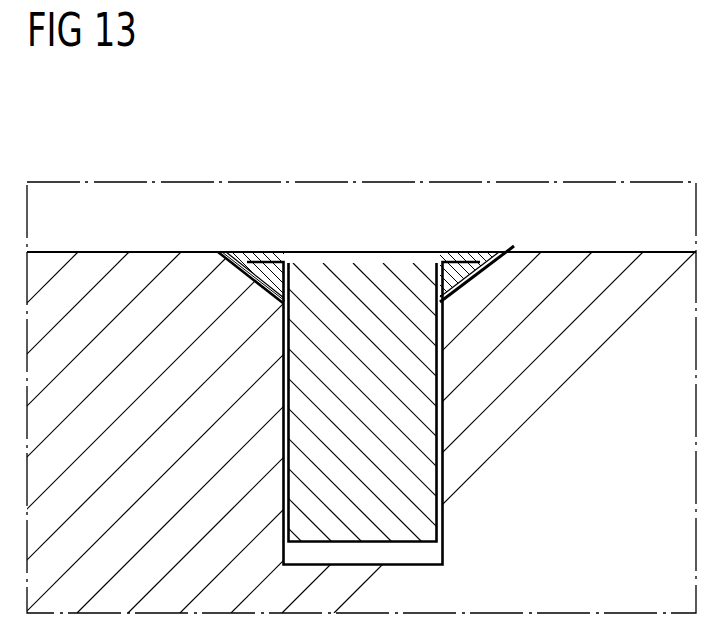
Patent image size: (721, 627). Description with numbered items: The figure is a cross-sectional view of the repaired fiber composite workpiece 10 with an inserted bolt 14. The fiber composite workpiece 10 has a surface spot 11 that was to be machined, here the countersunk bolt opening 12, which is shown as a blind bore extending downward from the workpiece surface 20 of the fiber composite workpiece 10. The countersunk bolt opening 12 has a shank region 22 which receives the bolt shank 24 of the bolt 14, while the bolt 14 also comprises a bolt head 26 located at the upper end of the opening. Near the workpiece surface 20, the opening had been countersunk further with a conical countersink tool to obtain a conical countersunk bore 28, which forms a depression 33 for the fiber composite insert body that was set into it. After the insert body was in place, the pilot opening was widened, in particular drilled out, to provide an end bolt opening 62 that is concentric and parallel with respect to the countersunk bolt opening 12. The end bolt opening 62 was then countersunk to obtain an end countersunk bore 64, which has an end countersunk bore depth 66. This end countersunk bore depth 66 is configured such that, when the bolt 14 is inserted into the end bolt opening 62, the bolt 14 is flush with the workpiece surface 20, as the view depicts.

The fiber composite workpiece 10 is at (122, 150).
The surface spot 11 is at (404, 203).
The countersunk bolt opening 12 is at (292, 556).
The bolt 14 is at (361, 270).
The workpiece surface 20 is at (612, 251).
The shank region 22 is at (444, 458).
The bolt shank 24 is at (440, 518).
The bolt head 26 is at (326, 251).
The conical countersunk bore 28 is at (247, 283).
The depression 33 is at (522, 236).
The end bolt opening 62 is at (460, 277).
The end countersunk bore 64 is at (262, 262).
The end countersunk bore depth 66 is at (235, 258).